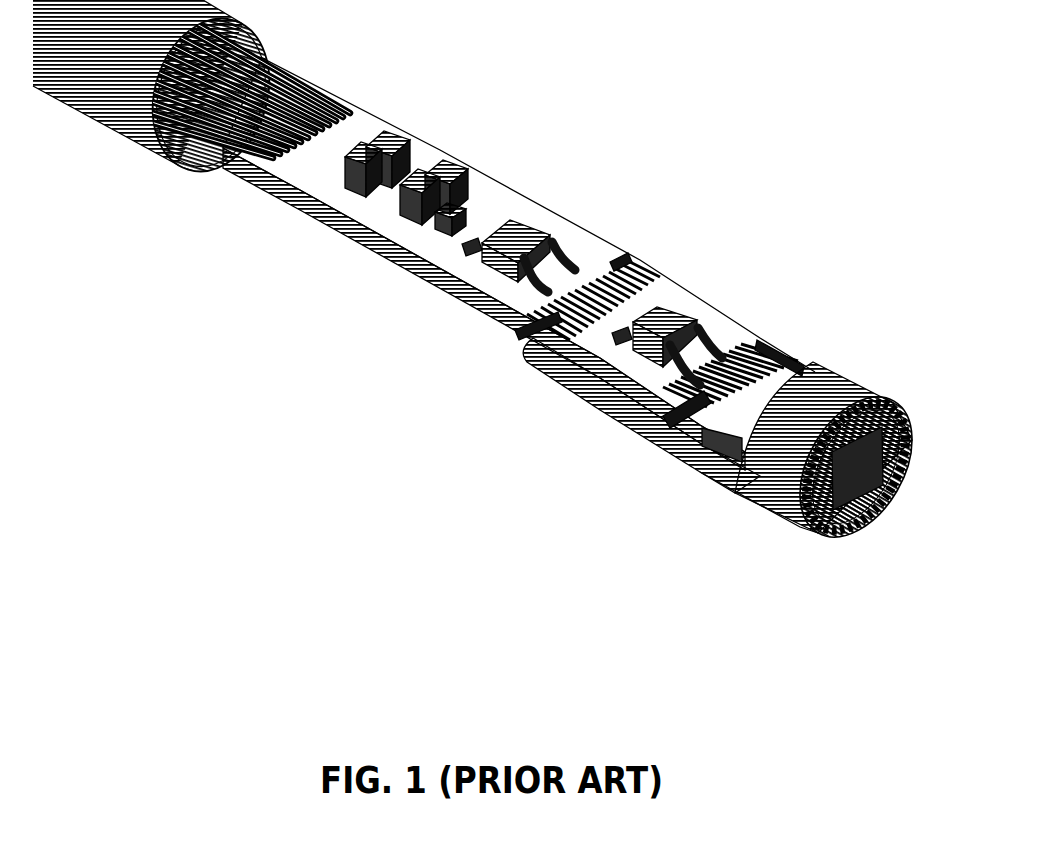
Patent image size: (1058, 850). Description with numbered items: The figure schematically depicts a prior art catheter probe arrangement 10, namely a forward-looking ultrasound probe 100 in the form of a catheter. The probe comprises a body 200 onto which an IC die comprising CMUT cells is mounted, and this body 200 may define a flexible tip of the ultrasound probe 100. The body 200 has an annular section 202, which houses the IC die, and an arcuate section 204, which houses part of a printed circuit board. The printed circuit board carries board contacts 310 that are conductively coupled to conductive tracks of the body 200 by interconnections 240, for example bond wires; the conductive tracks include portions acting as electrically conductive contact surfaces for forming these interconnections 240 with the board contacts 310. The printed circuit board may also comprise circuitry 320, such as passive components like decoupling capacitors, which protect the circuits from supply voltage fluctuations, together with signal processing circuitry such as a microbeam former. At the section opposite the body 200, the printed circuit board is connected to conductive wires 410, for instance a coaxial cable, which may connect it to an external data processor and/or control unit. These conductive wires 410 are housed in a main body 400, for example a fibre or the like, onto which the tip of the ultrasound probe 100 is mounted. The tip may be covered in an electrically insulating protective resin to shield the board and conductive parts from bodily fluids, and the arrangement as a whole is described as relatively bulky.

The optical module 10 is at (484, 344).
The ultrasound probe 100 is at (858, 507).
The body 200 is at (835, 360).
The annular section 202 is at (753, 480).
The arcuate section 204 is at (615, 403).
The interconnections 240 is at (690, 408).
The board contacts 310 is at (770, 340).
The circuitry 320 is at (672, 316).
The main body 400 is at (93, 95).
The conductive wires 410 is at (200, 140).